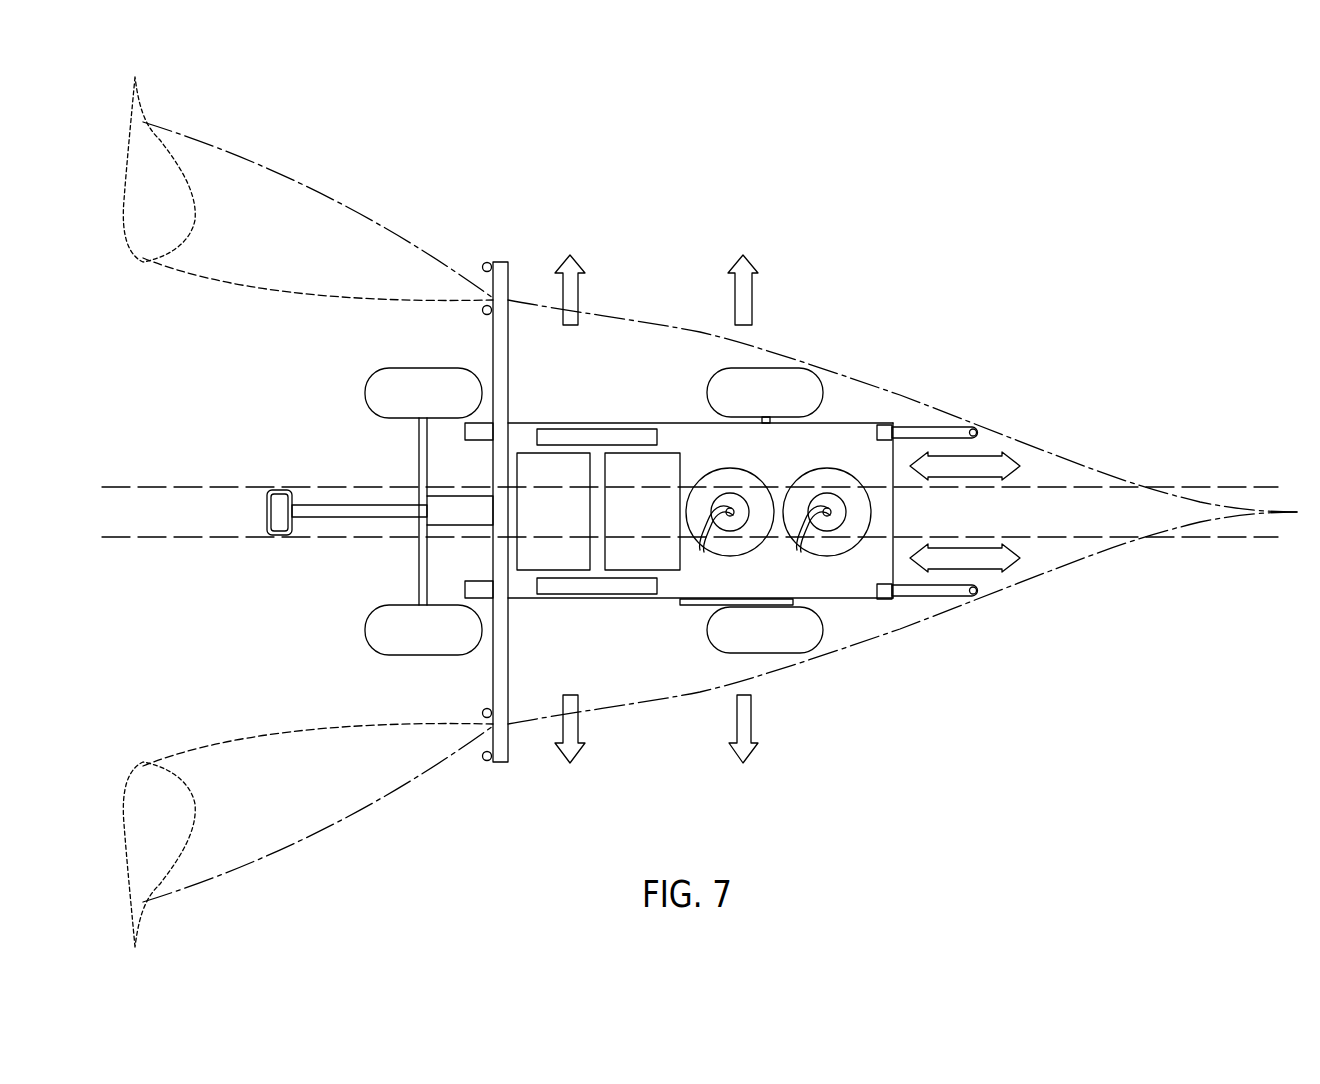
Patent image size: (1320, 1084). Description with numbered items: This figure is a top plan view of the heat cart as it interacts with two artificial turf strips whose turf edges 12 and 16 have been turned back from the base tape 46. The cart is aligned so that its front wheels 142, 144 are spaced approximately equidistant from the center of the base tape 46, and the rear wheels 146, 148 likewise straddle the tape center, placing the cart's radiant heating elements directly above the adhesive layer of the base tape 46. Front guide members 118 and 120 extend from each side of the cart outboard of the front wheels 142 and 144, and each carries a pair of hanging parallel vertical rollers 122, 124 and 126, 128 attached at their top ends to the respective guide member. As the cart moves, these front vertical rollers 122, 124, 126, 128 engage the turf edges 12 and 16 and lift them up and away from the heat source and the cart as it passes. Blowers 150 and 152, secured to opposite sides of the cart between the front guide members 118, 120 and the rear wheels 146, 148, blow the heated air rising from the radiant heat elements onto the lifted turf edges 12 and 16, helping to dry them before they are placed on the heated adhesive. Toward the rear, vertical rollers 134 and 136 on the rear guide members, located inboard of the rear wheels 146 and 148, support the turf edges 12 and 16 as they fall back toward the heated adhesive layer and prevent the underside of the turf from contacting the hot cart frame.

The turf edge 12 is at (240, 158).
The turf edge 16 is at (240, 866).
The base tape 46 is at (152, 494).
The front guide member 118 is at (518, 750).
The front guide member 120 is at (516, 274).
The vertical roller 122 is at (483, 757).
The vertical roller 124 is at (483, 713).
The vertical roller 126 is at (483, 265).
The vertical roller 128 is at (483, 311).
The vertical roller 134 is at (978, 431).
The vertical roller 136 is at (979, 595).
The front wheel 142 is at (368, 367).
The front wheel 144 is at (393, 656).
The rear wheel 146 is at (793, 374).
The rear wheel 148 is at (793, 651).
The blower 150 is at (573, 426).
The blower 152 is at (580, 597).